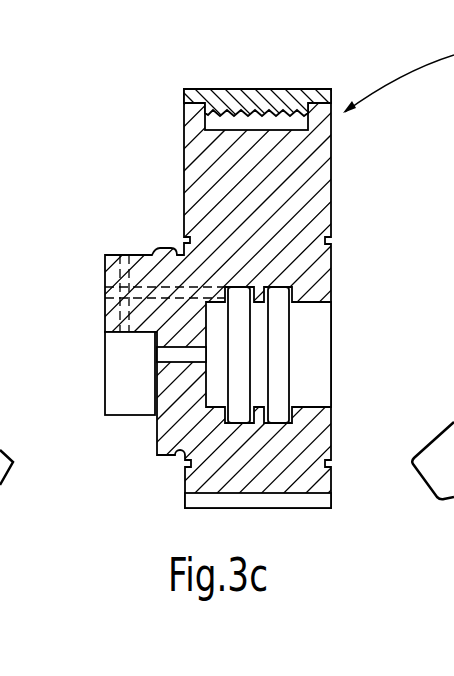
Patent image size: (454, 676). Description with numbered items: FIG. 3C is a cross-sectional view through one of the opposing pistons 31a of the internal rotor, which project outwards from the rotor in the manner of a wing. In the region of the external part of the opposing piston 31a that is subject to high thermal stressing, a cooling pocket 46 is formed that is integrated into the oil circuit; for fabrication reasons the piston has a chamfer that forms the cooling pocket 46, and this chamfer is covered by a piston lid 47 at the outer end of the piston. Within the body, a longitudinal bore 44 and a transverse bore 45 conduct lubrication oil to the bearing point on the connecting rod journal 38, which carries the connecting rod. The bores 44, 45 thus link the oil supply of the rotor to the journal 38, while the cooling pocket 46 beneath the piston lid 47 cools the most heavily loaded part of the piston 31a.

The opposing piston 31a is at (223, 163).
The cooling pocket 46 is at (248, 122).
The piston lid 47 is at (291, 108).
The longitudinal bore 44 is at (170, 290).
The transverse bore 45 is at (124, 316).
The connecting rod journal 38 is at (137, 393).